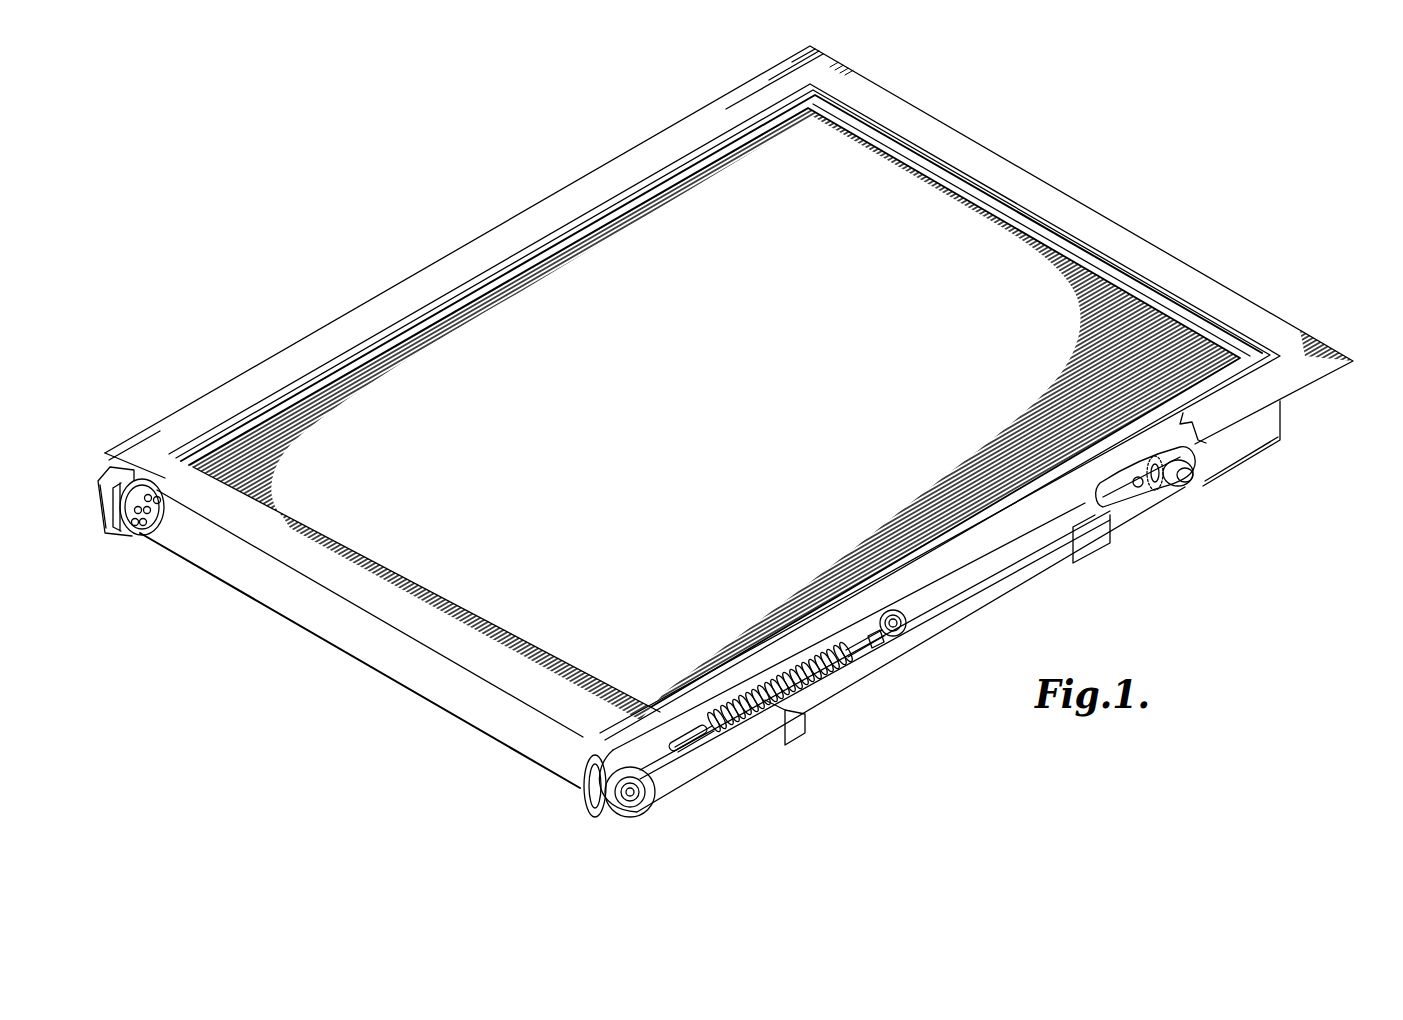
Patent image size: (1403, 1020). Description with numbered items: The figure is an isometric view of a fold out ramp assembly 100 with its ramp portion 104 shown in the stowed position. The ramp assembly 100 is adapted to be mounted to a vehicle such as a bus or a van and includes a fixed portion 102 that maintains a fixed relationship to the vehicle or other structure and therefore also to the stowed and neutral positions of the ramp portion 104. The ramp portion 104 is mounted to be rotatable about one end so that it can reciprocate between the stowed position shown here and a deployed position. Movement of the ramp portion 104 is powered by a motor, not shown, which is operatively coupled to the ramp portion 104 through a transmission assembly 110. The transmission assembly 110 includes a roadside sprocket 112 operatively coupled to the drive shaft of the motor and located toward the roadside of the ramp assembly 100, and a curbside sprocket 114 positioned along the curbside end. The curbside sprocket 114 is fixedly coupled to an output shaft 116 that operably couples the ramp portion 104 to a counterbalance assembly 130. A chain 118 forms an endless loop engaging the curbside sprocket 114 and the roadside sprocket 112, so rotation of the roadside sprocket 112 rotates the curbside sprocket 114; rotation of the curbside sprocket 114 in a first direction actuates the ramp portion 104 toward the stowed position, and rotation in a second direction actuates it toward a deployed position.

The fold out ramp assembly 100 is at (306, 244).
The fixed portion 102 is at (1312, 346).
The ramp portion 104 is at (955, 236).
The transmission assembly 110 is at (1198, 464).
The roadside sprocket 112 is at (1153, 490).
The curbside sprocket 114 is at (603, 812).
The output shaft 116 is at (638, 795).
The chain 118 is at (1003, 566).
The counterbalance assembly 130 is at (862, 667).